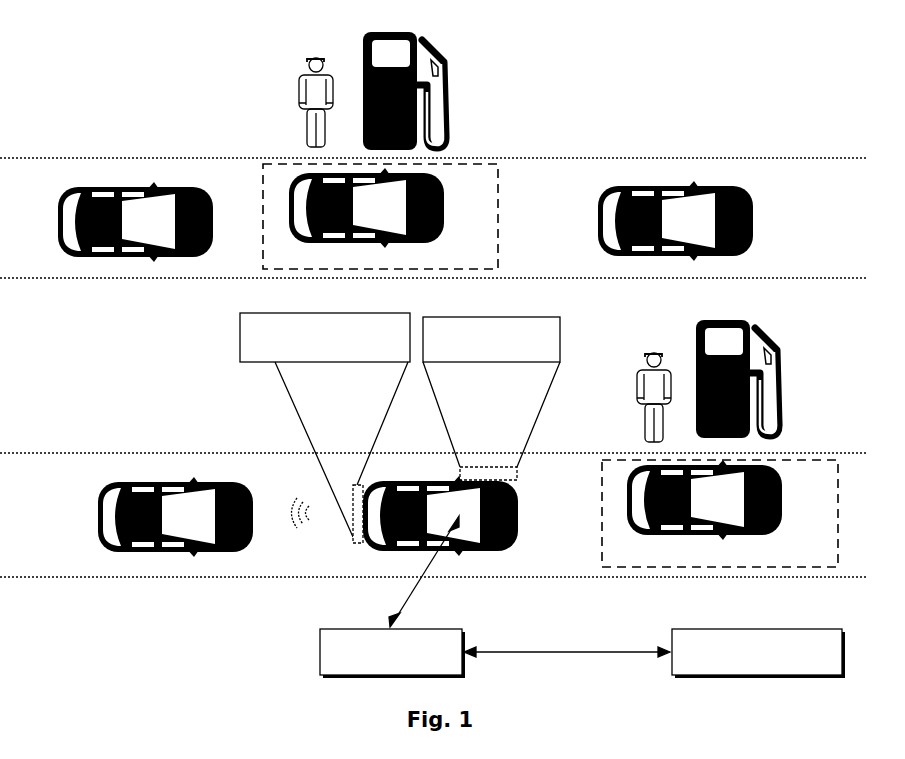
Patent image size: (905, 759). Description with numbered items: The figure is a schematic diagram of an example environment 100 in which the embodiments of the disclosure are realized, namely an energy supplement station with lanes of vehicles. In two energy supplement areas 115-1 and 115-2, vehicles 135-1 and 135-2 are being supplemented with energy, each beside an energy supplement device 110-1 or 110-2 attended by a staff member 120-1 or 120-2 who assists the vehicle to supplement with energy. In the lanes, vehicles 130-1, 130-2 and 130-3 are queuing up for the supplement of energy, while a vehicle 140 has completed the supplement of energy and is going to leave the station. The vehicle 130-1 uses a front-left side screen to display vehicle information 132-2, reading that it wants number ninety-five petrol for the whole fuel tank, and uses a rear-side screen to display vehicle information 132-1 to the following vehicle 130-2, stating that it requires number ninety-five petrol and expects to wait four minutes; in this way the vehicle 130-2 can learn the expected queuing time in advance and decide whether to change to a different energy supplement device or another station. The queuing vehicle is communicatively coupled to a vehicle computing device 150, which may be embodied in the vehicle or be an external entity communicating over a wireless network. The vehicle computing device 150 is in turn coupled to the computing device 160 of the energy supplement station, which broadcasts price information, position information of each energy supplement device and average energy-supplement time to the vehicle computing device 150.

The example environment 100 is at (94, 44).
The energy supplement device 110-1 is at (410, 31).
The energy supplement device 110-2 is at (737, 320).
The staff 120-1 is at (305, 58).
The staff 120-2 is at (646, 355).
The vehicle 130-1 is at (517, 486).
The vehicle 130-2 is at (252, 490).
The vehicle 130-3 is at (186, 190).
The vehicle information 132-1 is at (374, 315).
The vehicle information 132-2 is at (525, 318).
The vehicle being supplemented with energy 135-1 is at (446, 200).
The vehicle being supplemented with energy 135-2 is at (783, 485).
The energy supplement area 115-1 is at (498, 202).
The energy supplement area 115-2 is at (839, 502).
The vehicle 140 is at (754, 196).
The vehicle computing device 150 is at (435, 629).
The computing device of the energy supplement station 160 is at (788, 629).